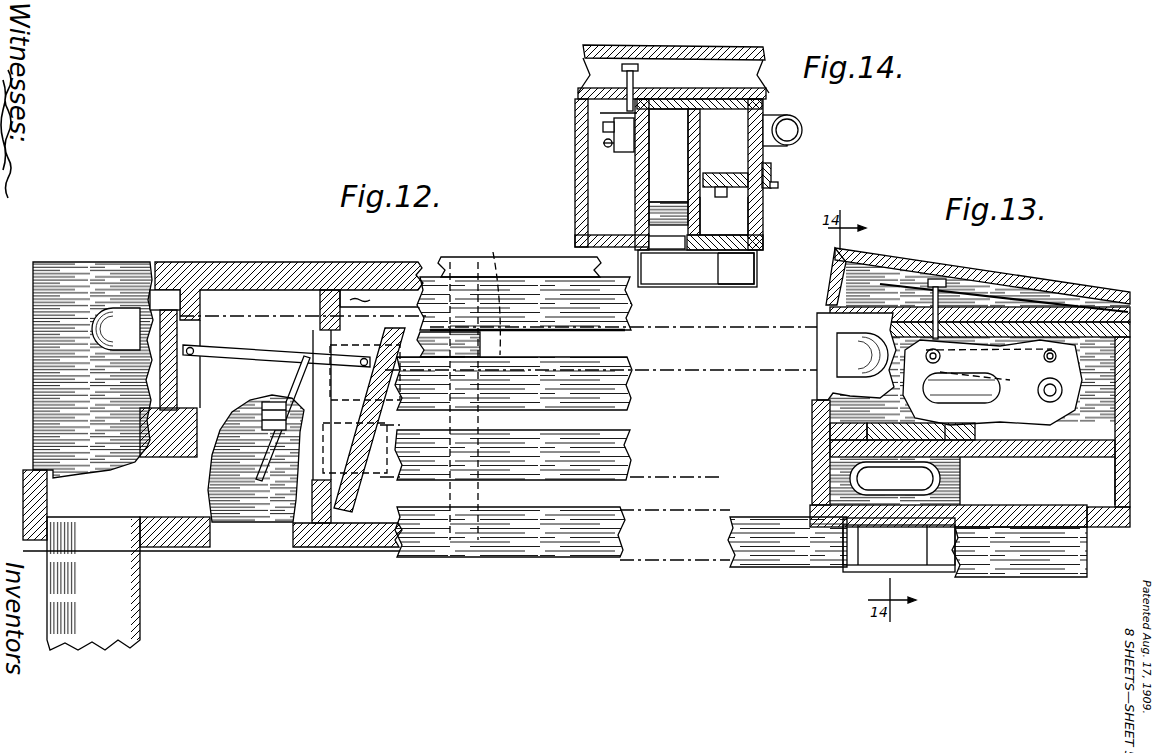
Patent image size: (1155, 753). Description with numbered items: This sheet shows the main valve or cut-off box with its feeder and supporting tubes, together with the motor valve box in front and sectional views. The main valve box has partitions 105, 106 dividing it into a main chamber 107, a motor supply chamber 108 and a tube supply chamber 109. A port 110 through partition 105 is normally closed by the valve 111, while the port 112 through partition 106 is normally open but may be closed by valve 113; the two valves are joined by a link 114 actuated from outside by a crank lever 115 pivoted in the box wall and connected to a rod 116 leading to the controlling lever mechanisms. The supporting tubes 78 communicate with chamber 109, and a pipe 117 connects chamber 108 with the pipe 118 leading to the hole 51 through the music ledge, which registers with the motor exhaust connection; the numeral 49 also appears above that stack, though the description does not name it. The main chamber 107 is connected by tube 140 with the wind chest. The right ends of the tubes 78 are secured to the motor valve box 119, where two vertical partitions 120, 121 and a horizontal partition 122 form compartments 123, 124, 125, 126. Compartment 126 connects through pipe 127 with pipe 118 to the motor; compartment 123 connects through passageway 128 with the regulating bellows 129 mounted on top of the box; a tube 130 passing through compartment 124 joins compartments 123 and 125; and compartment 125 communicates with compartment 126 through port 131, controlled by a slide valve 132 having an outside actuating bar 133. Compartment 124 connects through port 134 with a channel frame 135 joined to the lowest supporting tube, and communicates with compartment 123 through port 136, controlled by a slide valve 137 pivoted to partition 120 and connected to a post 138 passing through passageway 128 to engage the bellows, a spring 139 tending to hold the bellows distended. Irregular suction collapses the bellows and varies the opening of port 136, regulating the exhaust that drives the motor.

In FIG. 12, the bar 49 is at (458, 262).
In FIG. 12, the hole 51 is at (493, 262).
In FIG. 12, the supporting tubes 78 is at (618, 400).
In FIG. 14, the supporting tubes 78 is at (757, 278).
In FIG. 13, the supporting tubes 78 is at (746, 560).
In FIG. 12, the partition 105 is at (190, 312).
In FIG. 12, the partition 106 is at (330, 303).
In FIG. 12, the main chamber 107 is at (172, 507).
In FIG. 12, the motor supply chamber 108 is at (162, 290).
In FIG. 12, the tube supply chamber 109 is at (396, 305).
In FIG. 12, the port 110 is at (192, 402).
In FIG. 12, the valve 111 is at (196, 336).
In FIG. 12, the port 112 is at (318, 478).
In FIG. 12, the valve 113 is at (357, 467).
In FIG. 12, the link 114 is at (272, 360).
In FIG. 12, the crank lever 115 is at (270, 478).
In FIG. 12, the rod 116 is at (282, 422).
In FIG. 12, the pipe 117 is at (118, 317).
In FIG. 12, the pipe 118 is at (520, 345).
In FIG. 13, the motor valve box 119 is at (1087, 522).
In FIG. 14, the vertical partition 120 is at (636, 190).
In FIG. 13, the vertical partition 120 is at (858, 420).
In FIG. 14, the vertical partition 121 is at (694, 155).
In FIG. 13, the vertical partition 121 is at (1099, 432).
In FIG. 14, the horizontal partition 122 is at (755, 214).
In FIG. 13, the horizontal partition 122 is at (1067, 456).
In FIG. 14, the compartment 123 is at (596, 153).
In FIG. 14, the compartment 124 is at (677, 172).
In FIG. 14, the compartment 125 is at (733, 227).
In FIG. 13, the compartment 125 is at (835, 482).
In FIG. 14, the compartment 126 is at (735, 118).
In FIG. 13, the compartment 126 is at (846, 405).
In FIG. 14, the pipe 127 is at (802, 137).
In FIG. 13, the pipe 127 is at (852, 355).
In FIG. 14, the passageway 128 is at (578, 97).
In FIG. 13, the passageway 128 is at (1050, 297).
In FIG. 14, the regulating bellows 129 is at (717, 62).
In FIG. 13, the regulating bellows 129 is at (886, 272).
In FIG. 14, the tube 130 is at (669, 200).
In FIG. 13, the tube 130 is at (830, 465).
In FIG. 14, the port 131 is at (723, 190).
In FIG. 14, the slide valve 132 is at (771, 174).
In FIG. 13, the slide valve 132 is at (948, 432).
In FIG. 14, the actuating bar 133 is at (778, 185).
In FIG. 14, the port 134 is at (649, 246).
In FIG. 14, the channel frame 135 is at (663, 272).
In FIG. 13, the channel frame 135 is at (853, 545).
In FIG. 14, the port 136 is at (669, 155).
In FIG. 13, the port 136 is at (998, 443).
In FIG. 14, the slide valve 137 is at (606, 138).
In FIG. 13, the slide valve 137 is at (933, 607).
In FIG. 14, the post 138 is at (620, 72).
In FIG. 13, the post 138 is at (952, 285).
In FIG. 14, the spring 139 is at (620, 117).
In FIG. 13, the spring 139 is at (1098, 303).
In FIG. 12, the tube 140 is at (103, 640).